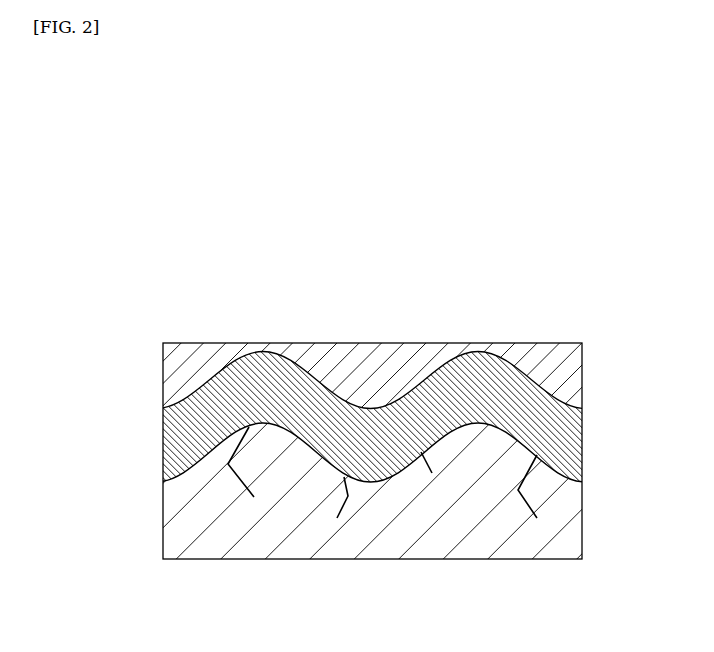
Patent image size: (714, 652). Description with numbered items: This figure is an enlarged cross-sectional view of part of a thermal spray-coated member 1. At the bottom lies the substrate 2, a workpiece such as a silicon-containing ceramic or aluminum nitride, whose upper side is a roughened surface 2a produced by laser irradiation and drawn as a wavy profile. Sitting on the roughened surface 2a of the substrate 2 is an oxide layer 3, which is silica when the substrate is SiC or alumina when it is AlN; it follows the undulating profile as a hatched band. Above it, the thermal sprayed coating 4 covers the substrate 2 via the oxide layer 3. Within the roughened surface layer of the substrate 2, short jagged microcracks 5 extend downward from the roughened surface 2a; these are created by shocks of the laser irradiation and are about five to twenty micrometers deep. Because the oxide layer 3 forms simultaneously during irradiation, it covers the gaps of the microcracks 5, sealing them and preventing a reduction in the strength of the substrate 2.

The thermal spray-coated member 1 is at (357, 429).
The substrate 2 is at (357, 451).
The roughened surface 2a is at (201, 457).
The oxide layer 3 is at (567, 442).
The thermal sprayed coating 4 is at (568, 373).
The microcracks 5 is at (253, 487).